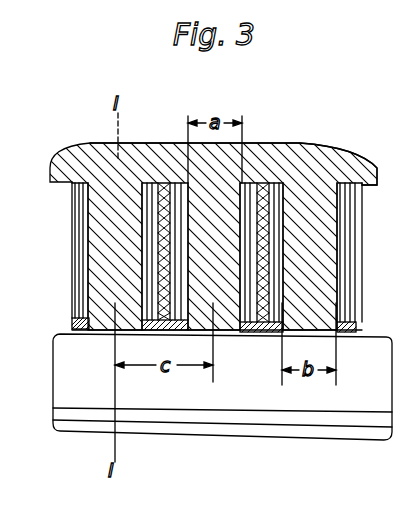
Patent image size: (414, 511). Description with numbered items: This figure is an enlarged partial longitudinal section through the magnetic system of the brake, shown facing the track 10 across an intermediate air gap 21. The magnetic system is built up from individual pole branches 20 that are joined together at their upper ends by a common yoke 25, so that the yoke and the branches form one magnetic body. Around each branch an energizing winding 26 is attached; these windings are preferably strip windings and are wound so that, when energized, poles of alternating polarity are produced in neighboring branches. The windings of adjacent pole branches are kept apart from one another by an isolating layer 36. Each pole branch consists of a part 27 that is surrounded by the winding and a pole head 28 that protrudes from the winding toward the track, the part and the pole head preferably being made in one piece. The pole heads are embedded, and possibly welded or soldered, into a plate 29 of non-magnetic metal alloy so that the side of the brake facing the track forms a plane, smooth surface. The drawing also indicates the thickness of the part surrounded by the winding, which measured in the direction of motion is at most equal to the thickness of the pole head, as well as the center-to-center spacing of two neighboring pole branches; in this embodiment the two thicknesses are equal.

The track 10 is at (152, 392).
The pole branch 20 is at (88, 270).
The air gap 21 is at (354, 303).
The yoke 25 is at (323, 170).
The energizing winding 26 is at (348, 247).
The part surrounded by the winding 27 is at (207, 202).
The pole head 28 is at (104, 317).
The plate 29 is at (257, 303).
The isolating layer 36 is at (164, 183).